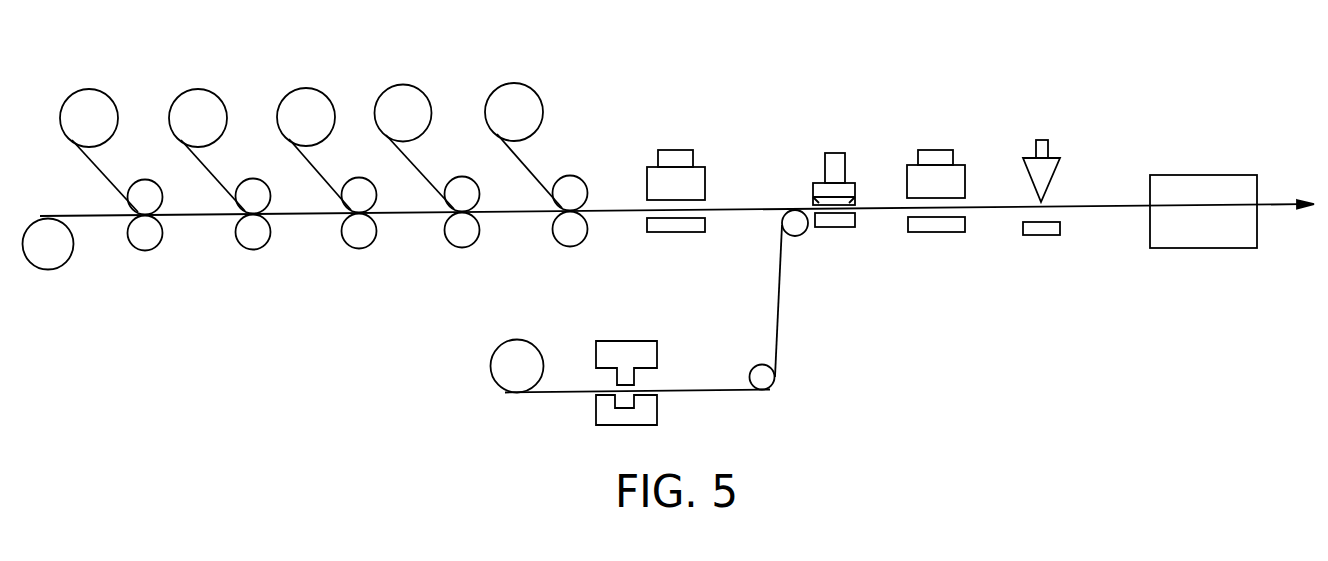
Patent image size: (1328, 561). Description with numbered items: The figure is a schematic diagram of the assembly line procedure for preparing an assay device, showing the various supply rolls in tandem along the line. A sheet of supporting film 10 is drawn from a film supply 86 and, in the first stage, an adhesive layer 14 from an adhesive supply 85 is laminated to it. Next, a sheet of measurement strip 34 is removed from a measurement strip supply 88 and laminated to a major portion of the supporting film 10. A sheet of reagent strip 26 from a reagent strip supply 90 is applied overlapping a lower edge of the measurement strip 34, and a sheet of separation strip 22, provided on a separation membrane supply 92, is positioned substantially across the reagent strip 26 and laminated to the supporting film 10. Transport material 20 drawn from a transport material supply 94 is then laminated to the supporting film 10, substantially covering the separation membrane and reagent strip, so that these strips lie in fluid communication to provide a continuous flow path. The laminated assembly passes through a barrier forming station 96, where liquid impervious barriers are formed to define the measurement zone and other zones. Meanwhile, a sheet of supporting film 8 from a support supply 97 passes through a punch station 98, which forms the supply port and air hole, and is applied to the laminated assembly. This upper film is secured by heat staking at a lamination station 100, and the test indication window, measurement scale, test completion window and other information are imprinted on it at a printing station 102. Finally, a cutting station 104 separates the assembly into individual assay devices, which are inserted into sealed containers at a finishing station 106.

The supporting film 8 is at (563, 394).
The supporting film 10 is at (109, 218).
The adhesive layer 14 is at (93, 168).
The transport material 20 is at (512, 156).
The separation strip 22 is at (405, 159).
The reagent strip 26 is at (303, 157).
The measurement strip 34 is at (193, 155).
The adhesive supply 85 is at (90, 107).
The film supply 86 is at (50, 270).
The measurement strip supply 88 is at (200, 100).
The reagent strip supply 90 is at (310, 97).
The separation membrane supply 92 is at (411, 97).
The transport material supply 94 is at (525, 102).
The barrier forming station 96 is at (680, 158).
The support supply 97 is at (503, 368).
The punch station 98 is at (638, 350).
The lamination station 100 is at (833, 158).
The printing station 102 is at (940, 158).
The cutting station 104 is at (1045, 140).
The finishing station 106 is at (1198, 185).